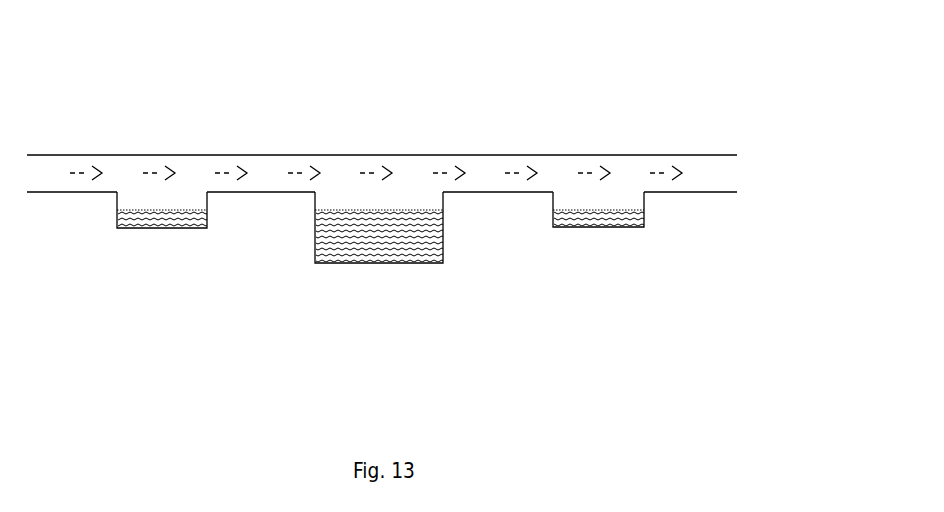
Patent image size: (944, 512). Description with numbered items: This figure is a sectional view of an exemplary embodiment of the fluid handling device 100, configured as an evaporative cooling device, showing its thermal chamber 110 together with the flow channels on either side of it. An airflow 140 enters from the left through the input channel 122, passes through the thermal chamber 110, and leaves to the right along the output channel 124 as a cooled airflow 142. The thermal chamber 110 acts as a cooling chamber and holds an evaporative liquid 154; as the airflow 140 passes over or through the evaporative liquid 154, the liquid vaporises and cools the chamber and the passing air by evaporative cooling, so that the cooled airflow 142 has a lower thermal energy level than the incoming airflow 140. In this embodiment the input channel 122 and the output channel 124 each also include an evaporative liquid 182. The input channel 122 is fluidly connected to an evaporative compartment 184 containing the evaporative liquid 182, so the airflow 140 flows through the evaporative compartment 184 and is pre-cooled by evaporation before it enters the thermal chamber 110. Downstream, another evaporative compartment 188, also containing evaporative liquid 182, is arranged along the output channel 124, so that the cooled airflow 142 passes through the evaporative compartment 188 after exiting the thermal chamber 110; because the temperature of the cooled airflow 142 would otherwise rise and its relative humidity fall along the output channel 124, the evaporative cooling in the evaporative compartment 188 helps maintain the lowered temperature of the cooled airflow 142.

The fluid handling device 100 is at (749, 37).
The thermal chamber 110 is at (408, 197).
The input channel 122 is at (270, 162).
The output channel 124 is at (500, 165).
The airflow 140 is at (155, 162).
The cooled airflow 142 is at (664, 173).
The evaporative liquid 154 is at (385, 243).
The evaporative liquid 182 is at (167, 220).
The evaporative compartment 184 is at (117, 212).
The evaporative compartment 188 is at (643, 217).